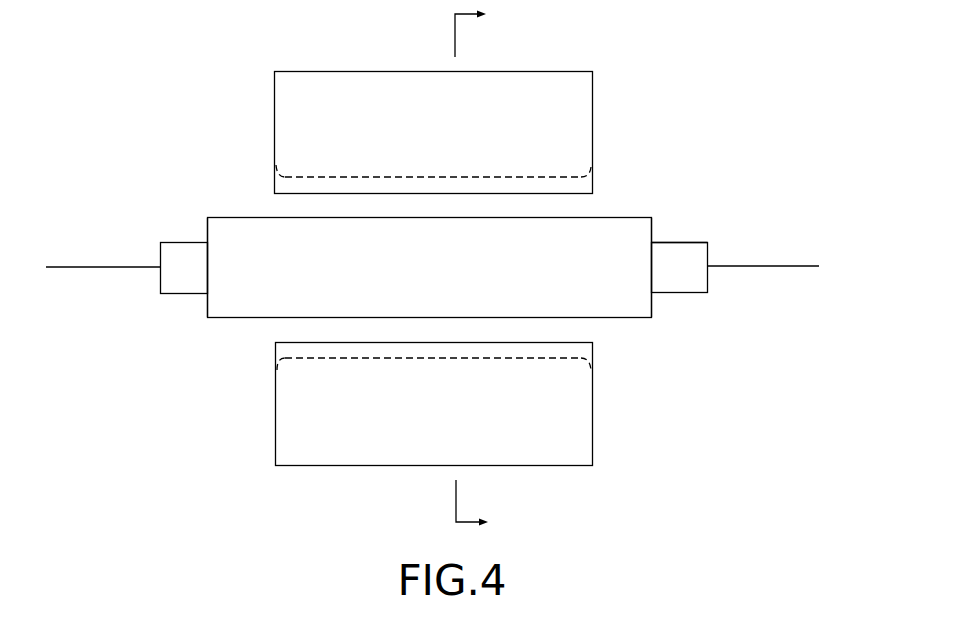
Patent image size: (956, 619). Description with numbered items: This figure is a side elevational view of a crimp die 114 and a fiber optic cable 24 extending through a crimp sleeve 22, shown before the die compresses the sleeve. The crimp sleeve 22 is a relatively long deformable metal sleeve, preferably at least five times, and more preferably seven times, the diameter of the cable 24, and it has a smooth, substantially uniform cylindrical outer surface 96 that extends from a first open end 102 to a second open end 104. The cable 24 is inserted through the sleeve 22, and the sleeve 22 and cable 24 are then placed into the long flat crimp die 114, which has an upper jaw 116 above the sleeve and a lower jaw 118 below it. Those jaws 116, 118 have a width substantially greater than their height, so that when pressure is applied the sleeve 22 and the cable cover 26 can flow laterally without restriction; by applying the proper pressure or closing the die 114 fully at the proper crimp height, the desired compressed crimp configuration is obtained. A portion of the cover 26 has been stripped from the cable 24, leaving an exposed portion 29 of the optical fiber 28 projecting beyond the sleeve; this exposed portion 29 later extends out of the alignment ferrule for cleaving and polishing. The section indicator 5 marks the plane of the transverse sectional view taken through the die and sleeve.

The section line 5- 5 is at (485, 268).
The crimp sleeve 22 is at (226, 324).
The fiber optic cable 24 is at (685, 306).
The cover 26 is at (697, 240).
The optical fiber 28 is at (107, 268).
The exposed portion 29 is at (797, 265).
The outer surface 96 is at (626, 226).
The first open end 102 is at (207, 230).
The second open end 104 is at (656, 302).
The crimp die 114 is at (658, 446).
The upper jaw 116 is at (274, 97).
The lower jaw 118 is at (275, 445).